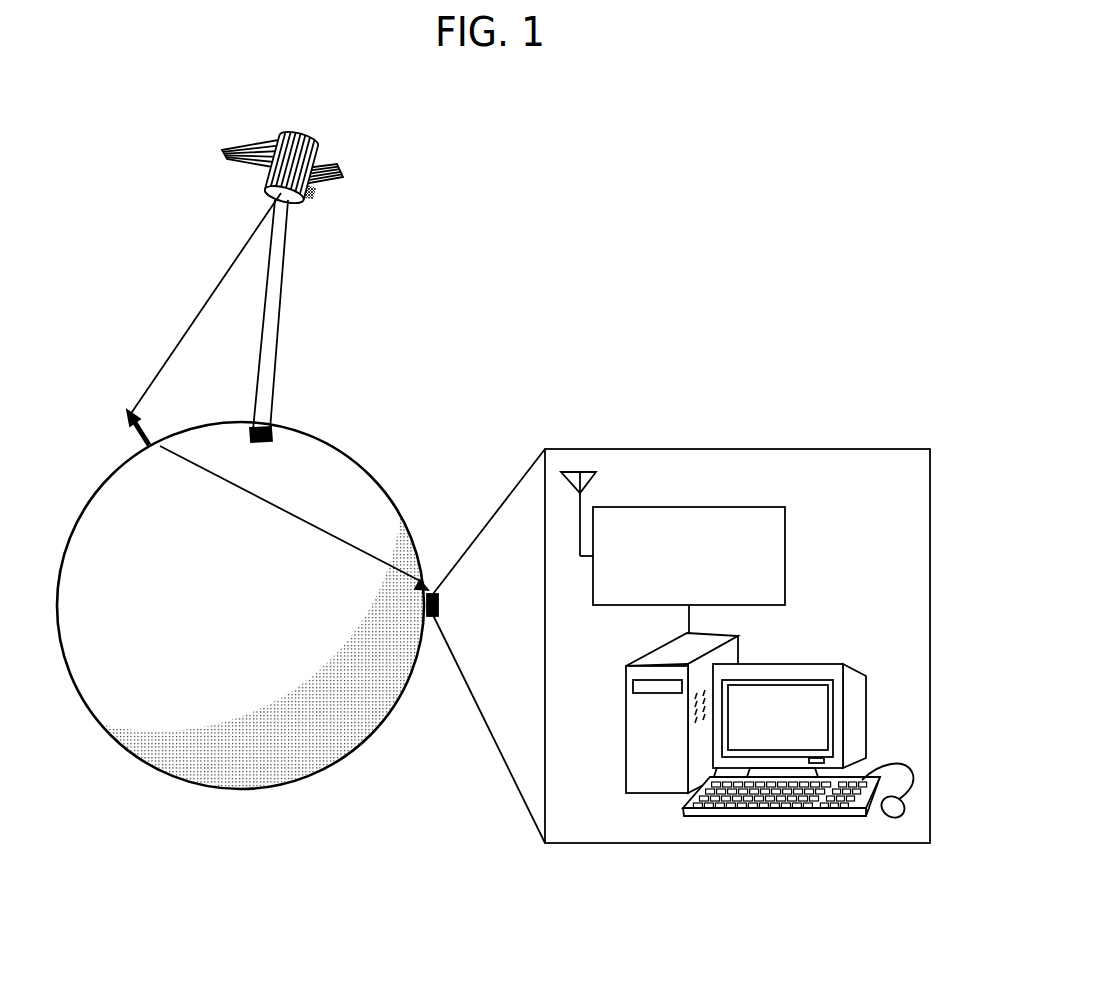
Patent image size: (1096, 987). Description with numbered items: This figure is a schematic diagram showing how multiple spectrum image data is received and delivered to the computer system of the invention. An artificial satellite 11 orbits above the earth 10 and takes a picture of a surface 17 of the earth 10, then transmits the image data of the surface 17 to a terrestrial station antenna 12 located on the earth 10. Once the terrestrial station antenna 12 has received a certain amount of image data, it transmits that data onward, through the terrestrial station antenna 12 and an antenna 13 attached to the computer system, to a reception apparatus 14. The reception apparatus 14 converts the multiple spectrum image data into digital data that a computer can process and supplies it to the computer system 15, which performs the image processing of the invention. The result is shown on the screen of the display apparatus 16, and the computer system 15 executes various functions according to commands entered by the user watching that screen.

The earth 10 is at (198, 767).
The artificial satellite 11 is at (320, 142).
The terrestrial station antenna 12 is at (128, 421).
The antenna 13 is at (452, 603).
The reception apparatus 14 is at (787, 553).
The computer system 15 is at (776, 656).
The display apparatus 16 is at (807, 702).
The surface 17 is at (275, 440).